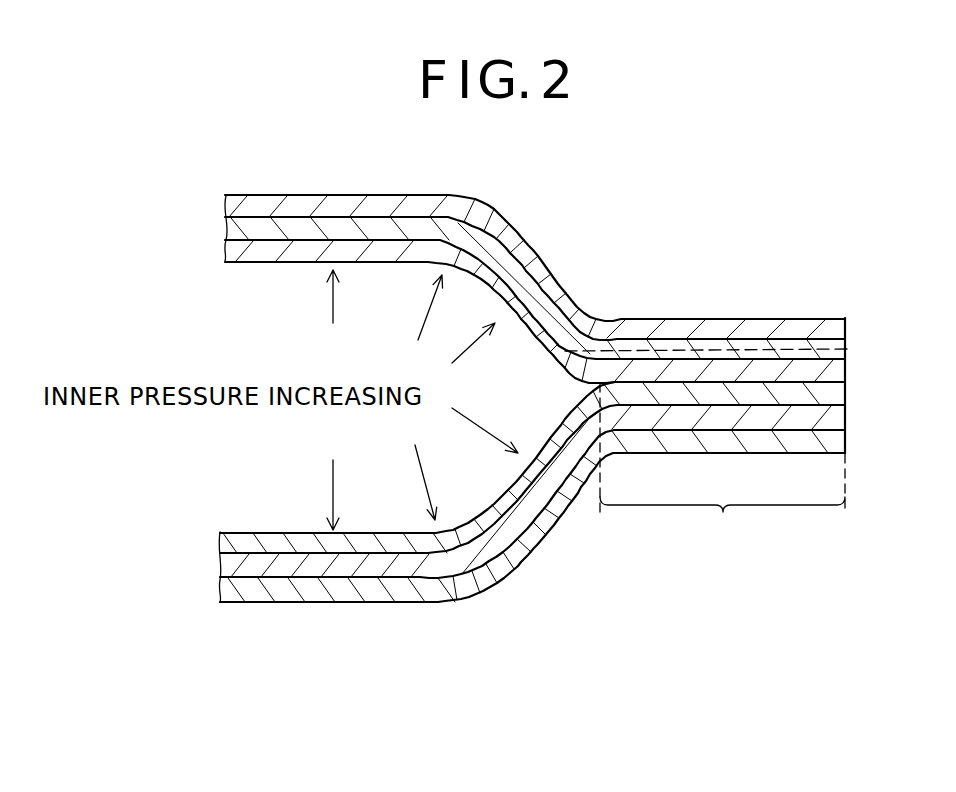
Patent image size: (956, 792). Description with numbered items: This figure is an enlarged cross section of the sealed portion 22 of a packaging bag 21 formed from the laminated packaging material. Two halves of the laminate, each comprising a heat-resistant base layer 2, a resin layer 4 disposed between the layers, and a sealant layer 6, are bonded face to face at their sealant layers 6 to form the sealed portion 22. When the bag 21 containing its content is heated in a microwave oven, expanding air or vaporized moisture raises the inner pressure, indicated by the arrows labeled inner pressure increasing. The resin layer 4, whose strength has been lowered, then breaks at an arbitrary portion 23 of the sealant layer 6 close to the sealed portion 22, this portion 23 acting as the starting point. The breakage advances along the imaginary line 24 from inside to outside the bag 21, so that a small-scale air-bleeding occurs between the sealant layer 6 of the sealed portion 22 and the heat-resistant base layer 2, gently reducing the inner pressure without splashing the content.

The heat-resistant base layer 2 is at (845, 323).
The resin layer 4 is at (840, 345).
The sealant layer 6 is at (840, 372).
The packaging bag 21 is at (356, 629).
The sealed portion 22 is at (722, 465).
The arbitrary portion 23 is at (578, 352).
The imaginary line 24 is at (682, 347).